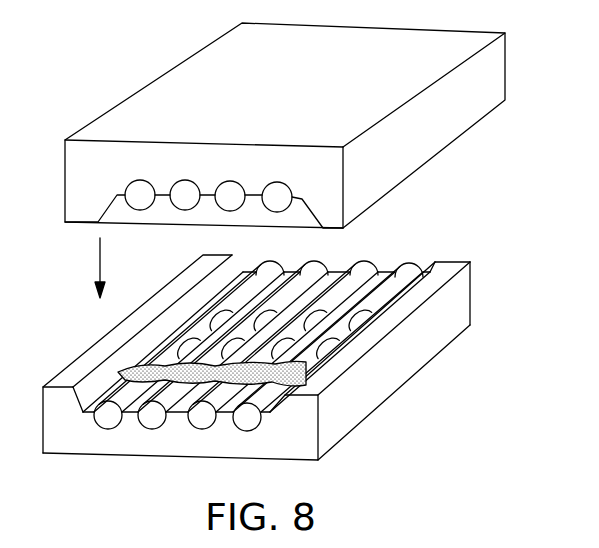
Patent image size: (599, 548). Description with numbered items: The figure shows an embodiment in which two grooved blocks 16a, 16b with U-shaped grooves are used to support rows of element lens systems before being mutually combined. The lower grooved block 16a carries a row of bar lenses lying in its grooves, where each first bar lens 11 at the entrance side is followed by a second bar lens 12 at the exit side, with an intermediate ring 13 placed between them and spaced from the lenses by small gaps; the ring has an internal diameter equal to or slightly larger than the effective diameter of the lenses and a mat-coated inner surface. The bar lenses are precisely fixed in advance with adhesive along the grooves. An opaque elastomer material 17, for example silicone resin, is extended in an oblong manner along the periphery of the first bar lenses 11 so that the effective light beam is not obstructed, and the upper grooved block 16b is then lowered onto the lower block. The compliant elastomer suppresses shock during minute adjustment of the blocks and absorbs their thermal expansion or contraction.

The first bar lens 11 is at (245, 420).
The second bar lens 12 is at (404, 272).
The intermediate ring 13 is at (335, 338).
The grooved block 16a is at (440, 335).
The grooved block 16b is at (448, 127).
The opaque elastomer material 17 is at (133, 366).